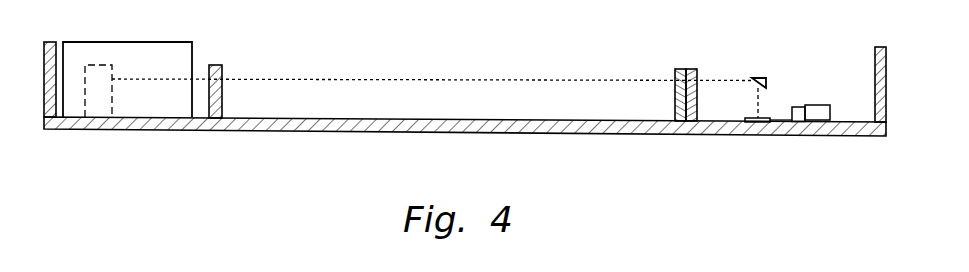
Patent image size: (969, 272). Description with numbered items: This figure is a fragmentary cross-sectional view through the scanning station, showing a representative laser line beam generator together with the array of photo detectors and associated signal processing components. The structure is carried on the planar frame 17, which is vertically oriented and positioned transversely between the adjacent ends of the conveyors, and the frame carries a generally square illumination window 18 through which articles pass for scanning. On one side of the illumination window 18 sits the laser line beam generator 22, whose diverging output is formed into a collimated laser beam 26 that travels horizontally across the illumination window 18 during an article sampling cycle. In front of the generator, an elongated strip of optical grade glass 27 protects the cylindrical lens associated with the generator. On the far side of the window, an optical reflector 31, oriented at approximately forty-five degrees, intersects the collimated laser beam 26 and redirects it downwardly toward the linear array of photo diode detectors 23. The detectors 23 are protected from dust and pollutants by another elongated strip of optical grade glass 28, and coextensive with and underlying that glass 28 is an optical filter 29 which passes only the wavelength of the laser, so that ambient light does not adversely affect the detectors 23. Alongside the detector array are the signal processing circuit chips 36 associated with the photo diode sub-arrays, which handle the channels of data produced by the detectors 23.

The planar frame 17 is at (66, 107).
The illumination window 18 is at (632, 110).
The laser line beam generator 22 is at (127, 65).
The linear array of photo diode detectors 23 is at (774, 108).
The collimated laser beam 26 is at (263, 78).
The strip of optical grade glass 27 is at (215, 65).
The strip of optical grade glass 28 is at (680, 68).
The optical filter 29 is at (694, 68).
The optical reflector 31 is at (757, 77).
The signal processing circuit chip 36 is at (797, 121).